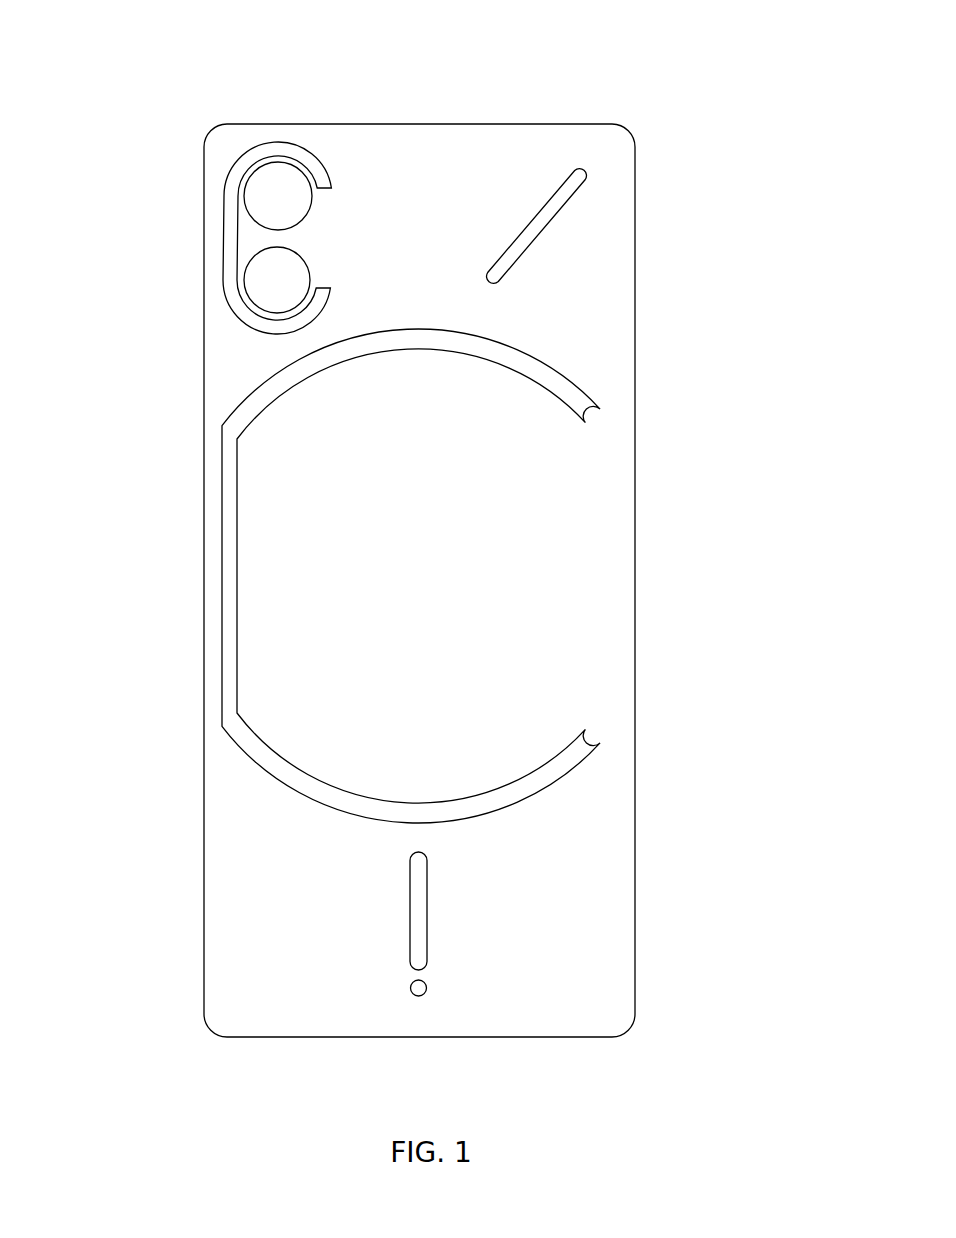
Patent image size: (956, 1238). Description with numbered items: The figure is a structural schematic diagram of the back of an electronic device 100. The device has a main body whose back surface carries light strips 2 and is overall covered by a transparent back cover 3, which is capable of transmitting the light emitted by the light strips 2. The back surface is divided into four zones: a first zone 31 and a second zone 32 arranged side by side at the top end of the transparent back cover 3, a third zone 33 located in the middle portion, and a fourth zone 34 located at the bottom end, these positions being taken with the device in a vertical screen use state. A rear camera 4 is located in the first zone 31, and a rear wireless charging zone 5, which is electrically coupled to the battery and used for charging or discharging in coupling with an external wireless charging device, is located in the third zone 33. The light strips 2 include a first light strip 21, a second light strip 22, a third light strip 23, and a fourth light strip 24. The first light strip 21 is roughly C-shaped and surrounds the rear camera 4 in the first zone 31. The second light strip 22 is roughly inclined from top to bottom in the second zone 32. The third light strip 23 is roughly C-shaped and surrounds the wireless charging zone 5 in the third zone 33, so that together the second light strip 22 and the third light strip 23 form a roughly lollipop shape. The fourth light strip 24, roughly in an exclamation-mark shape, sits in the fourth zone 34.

The electronic device 100 is at (460, 68).
The light strips 2 is at (696, 188).
The first light strip 21 is at (227, 225).
The second light strip 22 is at (543, 212).
The third light strip 23 is at (227, 545).
The fourth light strip 24 is at (418, 918).
The transparent back cover 3 is at (610, 643).
The first zone 31 is at (316, 130).
The second zone 32 is at (597, 145).
The third zone 33 is at (590, 525).
The fourth zone 34 is at (578, 1002).
The rear camera 4 is at (277, 195).
The wireless charging zone 5 is at (322, 545).